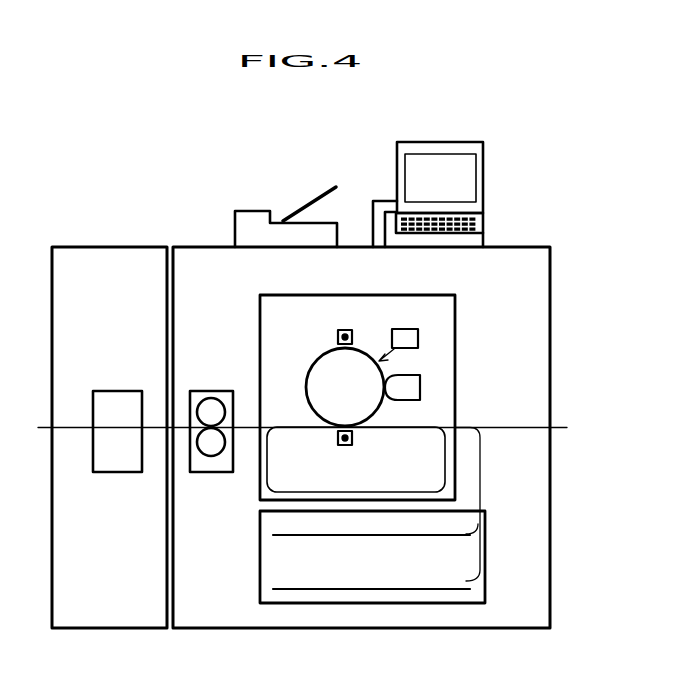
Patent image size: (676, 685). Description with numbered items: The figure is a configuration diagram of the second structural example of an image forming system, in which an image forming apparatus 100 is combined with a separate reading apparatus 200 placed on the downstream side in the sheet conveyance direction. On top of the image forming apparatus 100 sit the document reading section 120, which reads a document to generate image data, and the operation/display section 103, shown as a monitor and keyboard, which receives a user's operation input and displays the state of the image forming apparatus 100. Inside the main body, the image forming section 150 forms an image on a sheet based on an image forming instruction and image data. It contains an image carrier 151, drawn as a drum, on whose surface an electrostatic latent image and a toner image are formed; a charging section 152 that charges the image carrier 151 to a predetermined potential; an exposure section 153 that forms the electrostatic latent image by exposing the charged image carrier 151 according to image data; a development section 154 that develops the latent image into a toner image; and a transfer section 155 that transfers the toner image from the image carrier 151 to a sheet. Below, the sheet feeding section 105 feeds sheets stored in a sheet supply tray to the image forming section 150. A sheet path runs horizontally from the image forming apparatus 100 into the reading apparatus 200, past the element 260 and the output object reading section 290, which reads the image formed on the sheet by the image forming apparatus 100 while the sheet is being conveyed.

The image forming apparatus 100 is at (350, 247).
The operation/display section 103 is at (443, 142).
The sheet feeding section 105 is at (363, 565).
The document reading section 120 is at (270, 211).
The image forming section 150 is at (358, 295).
The image carrier 151 is at (309, 369).
The charging section 152 is at (345, 330).
The exposure section 153 is at (400, 329).
The development section 154 is at (420, 375).
The transfer section 155 is at (345, 447).
The reading apparatus 200 is at (115, 247).
The conveying rollers 260 is at (208, 391).
The output object reading section 290 is at (122, 391).